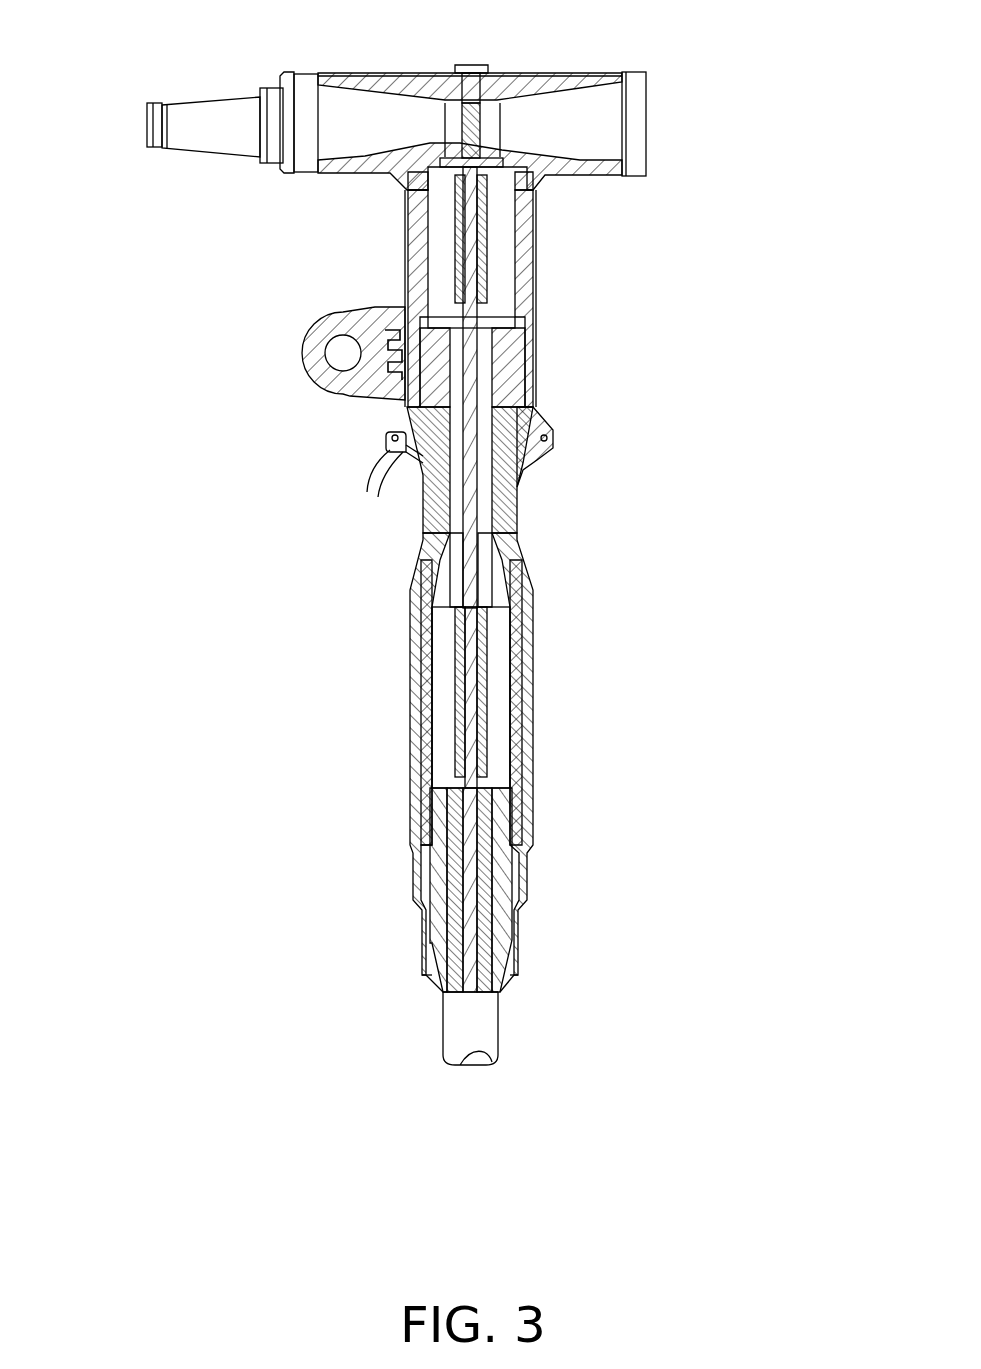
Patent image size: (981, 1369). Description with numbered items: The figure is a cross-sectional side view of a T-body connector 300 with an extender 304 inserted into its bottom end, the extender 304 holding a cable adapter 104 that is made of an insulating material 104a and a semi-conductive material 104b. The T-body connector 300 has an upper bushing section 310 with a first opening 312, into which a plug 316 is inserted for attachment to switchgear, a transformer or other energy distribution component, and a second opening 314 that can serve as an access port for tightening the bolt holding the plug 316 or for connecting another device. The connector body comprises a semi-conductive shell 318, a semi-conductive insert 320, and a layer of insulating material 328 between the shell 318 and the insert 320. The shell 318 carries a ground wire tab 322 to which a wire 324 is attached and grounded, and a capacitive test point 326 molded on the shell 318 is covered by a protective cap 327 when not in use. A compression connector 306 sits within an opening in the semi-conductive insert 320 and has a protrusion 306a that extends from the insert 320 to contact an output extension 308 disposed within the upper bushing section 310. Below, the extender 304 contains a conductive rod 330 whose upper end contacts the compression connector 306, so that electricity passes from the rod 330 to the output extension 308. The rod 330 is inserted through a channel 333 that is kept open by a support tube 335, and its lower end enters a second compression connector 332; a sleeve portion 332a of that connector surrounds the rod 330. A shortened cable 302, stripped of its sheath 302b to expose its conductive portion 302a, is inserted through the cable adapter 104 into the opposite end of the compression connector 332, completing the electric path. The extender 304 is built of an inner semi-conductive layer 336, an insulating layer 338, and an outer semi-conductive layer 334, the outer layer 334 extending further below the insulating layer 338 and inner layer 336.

The T-body connector 300 is at (116, 63).
The plug 316 is at (207, 100).
The second opening 314 is at (636, 95).
The upper bushing section 310 is at (456, 135).
The first opening 312 is at (308, 175).
The output extension 308 is at (365, 170).
The protrusion 306a is at (515, 180).
The compression connector 306 is at (529, 289).
The shell 318 is at (540, 268).
The semi-conductive insert 320 is at (515, 320).
The insulating material 328 is at (505, 340).
The protective cap 327 is at (302, 351).
The capacitive test point 326 is at (377, 395).
The wire 324 is at (365, 490).
The ground wire tab 322 is at (400, 468).
The support tube 335 is at (522, 477).
The conductive rod 330 is at (472, 495).
The channel 333 is at (484, 574).
The pin section 332a is at (483, 680).
The compression connector 332 is at (498, 747).
The insulating layer 338 is at (420, 703).
The inner semi-conductive layer 336 is at (432, 758).
The outer semi-conductive layer 334 is at (409, 754).
The extender 304 is at (443, 890).
The sheath 302b is at (488, 876).
The conductive portion 302a is at (478, 893).
The insulating material 104a is at (438, 928).
The semi-conductive material 104b is at (430, 972).
The cable adapter 104 is at (518, 986).
The shortened cable 302 is at (503, 1046).